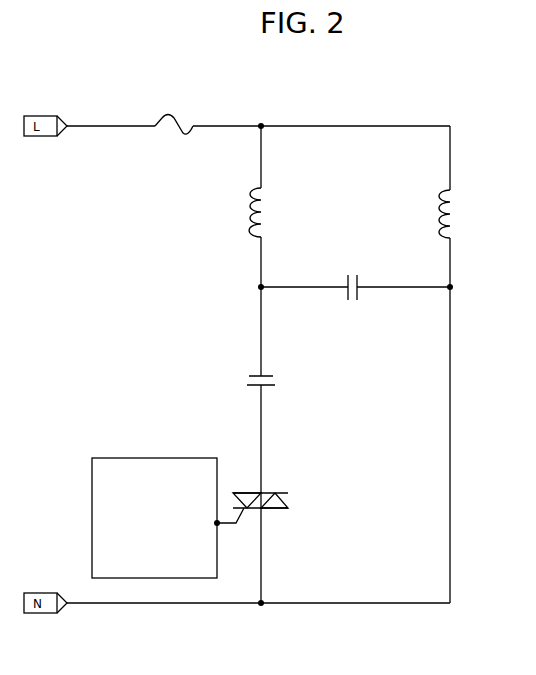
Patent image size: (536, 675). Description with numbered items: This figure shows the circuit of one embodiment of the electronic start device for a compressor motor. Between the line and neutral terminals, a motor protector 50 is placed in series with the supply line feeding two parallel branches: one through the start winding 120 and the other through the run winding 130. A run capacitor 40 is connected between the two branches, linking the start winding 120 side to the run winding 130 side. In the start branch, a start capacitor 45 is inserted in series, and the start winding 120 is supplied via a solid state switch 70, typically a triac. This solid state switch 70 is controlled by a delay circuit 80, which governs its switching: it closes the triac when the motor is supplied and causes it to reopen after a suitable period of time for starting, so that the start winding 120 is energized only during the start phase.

The motor protector 50 is at (181, 122).
The start winding 120 is at (250, 220).
The run winding 130 is at (455, 226).
The run capacitor 40 is at (358, 293).
The start capacitor 45 is at (255, 384).
The delay circuit 80 is at (145, 475).
The solid state switch 70 is at (272, 508).